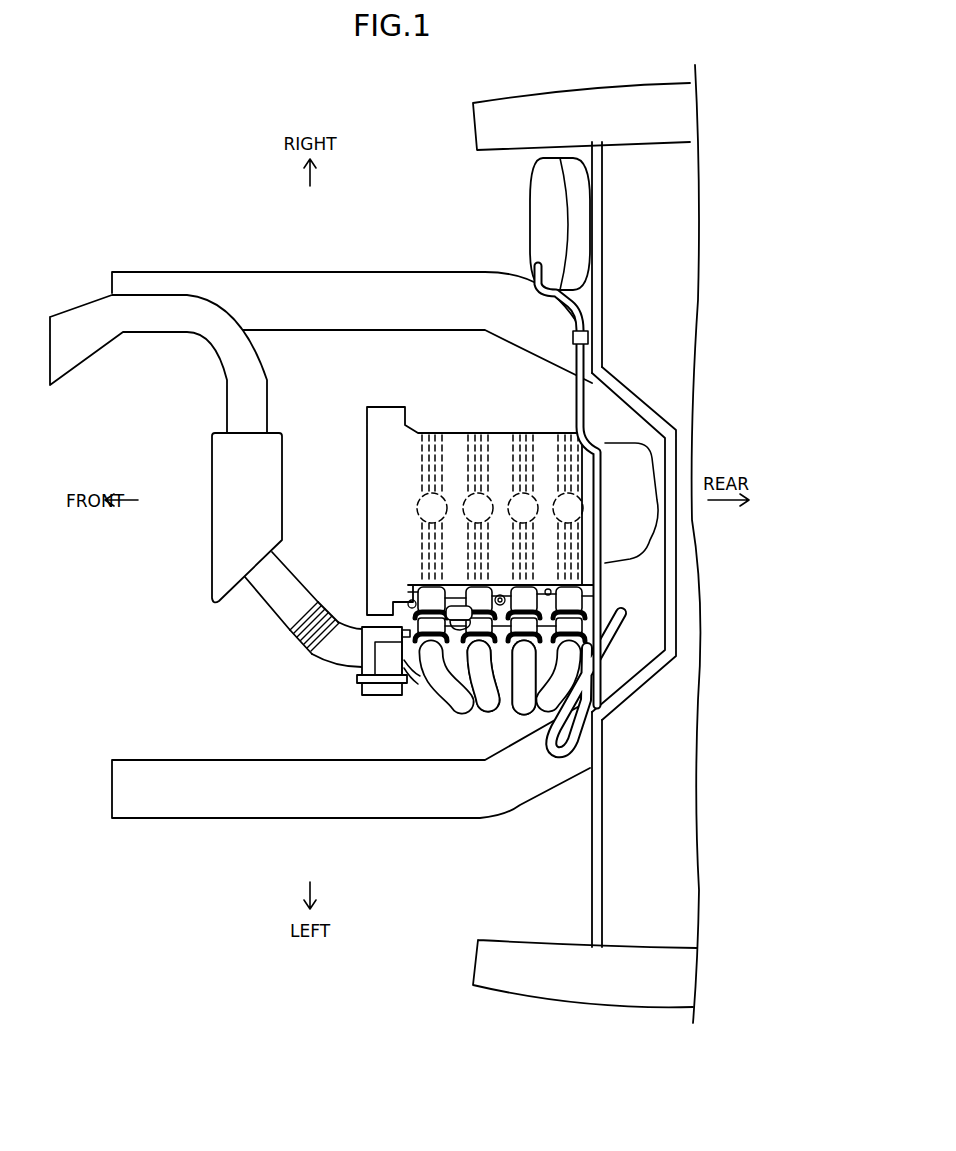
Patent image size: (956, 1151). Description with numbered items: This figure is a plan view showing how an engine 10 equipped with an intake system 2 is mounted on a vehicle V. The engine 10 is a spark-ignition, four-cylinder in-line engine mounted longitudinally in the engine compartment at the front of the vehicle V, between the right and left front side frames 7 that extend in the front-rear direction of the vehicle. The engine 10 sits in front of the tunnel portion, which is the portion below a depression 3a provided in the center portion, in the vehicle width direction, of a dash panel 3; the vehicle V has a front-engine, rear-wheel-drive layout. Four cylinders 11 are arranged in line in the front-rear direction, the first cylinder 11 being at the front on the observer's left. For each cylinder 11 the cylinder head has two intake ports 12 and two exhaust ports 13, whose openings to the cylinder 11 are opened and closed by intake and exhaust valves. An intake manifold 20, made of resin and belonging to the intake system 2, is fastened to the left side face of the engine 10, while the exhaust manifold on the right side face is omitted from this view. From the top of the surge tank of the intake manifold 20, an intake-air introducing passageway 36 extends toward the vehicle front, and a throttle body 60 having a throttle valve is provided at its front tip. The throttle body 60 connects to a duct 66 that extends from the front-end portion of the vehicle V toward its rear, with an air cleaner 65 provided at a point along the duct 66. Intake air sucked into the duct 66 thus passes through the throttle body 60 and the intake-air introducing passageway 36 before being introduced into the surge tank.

The vehicle V is at (116, 96).
The intake system 2 is at (470, 736).
The dash panel 3 is at (591, 876).
The depression 3a is at (630, 656).
The front side frames 7 is at (287, 272).
The engine 10 is at (449, 433).
The cylinder 11 is at (475, 515).
The intake port 12 is at (440, 566).
The exhaust port 13 is at (530, 433).
The intake manifold 20 is at (500, 715).
The intake-air introducing passageway 36 is at (411, 650).
The throttle body 60 is at (380, 697).
The air cleaner 65 is at (212, 498).
The duct 66 is at (213, 381).